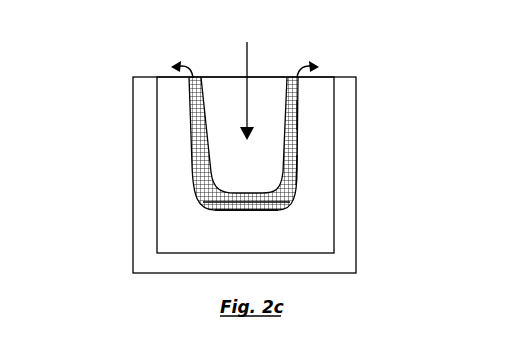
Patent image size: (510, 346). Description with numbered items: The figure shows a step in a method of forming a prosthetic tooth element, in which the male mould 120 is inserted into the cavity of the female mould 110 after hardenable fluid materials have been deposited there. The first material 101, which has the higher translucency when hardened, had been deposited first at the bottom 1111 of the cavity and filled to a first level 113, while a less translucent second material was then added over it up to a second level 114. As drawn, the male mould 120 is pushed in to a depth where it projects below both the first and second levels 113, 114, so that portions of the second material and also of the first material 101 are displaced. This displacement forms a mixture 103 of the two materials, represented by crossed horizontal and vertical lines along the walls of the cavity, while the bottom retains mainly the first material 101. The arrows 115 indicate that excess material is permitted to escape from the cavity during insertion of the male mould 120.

The female mould 110 is at (136, 111).
The first hardenable fluid material 101 is at (203, 207).
The mixture 103 is at (193, 146).
The bottom 1111 is at (258, 208).
The second level 114 is at (303, 115).
The first level 113 is at (303, 170).
The male mould 120 is at (230, 88).
The arrows 115 is at (299, 68).